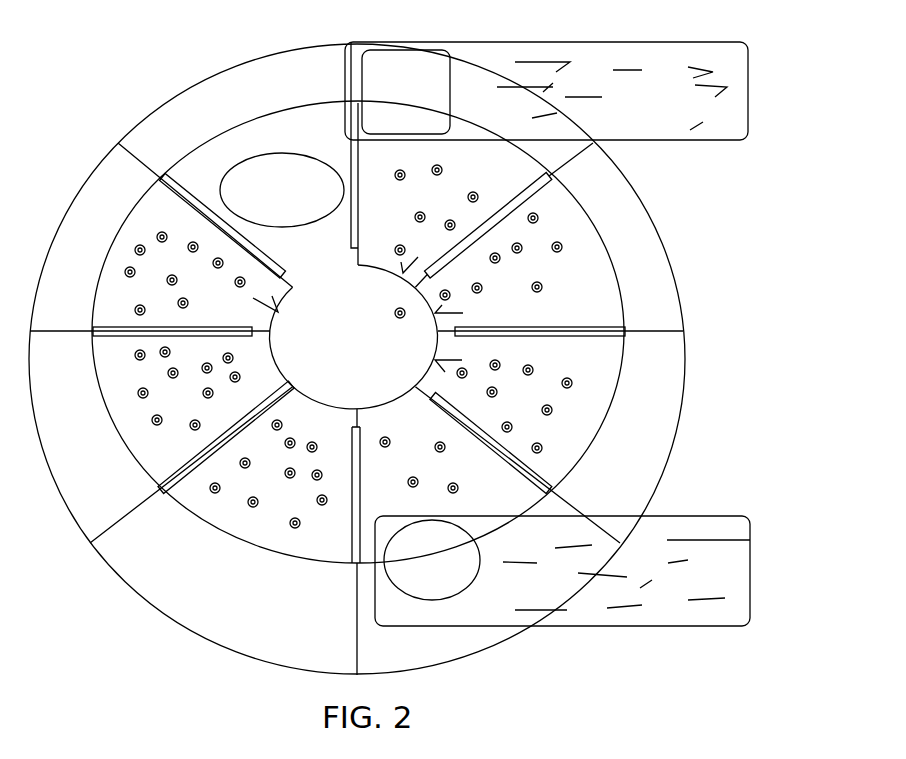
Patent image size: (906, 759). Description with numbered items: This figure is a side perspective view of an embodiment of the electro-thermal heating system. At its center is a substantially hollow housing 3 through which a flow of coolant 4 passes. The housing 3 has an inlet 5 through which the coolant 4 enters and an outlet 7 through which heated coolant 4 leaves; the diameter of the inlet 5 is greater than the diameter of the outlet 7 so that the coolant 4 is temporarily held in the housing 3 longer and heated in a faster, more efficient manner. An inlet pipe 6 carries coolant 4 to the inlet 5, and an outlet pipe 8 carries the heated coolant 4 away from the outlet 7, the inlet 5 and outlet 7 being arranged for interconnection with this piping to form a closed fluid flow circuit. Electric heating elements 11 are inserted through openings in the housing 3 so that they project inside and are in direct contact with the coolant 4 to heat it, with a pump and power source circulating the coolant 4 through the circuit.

The housing 3 is at (52, 233).
The coolant 4 is at (697, 590).
The inlet 5 is at (407, 578).
The inlet pipe 6 is at (716, 516).
The outlet 7 is at (400, 62).
The outlet pipe 8 is at (713, 142).
The electric heating elements 11 is at (170, 465).